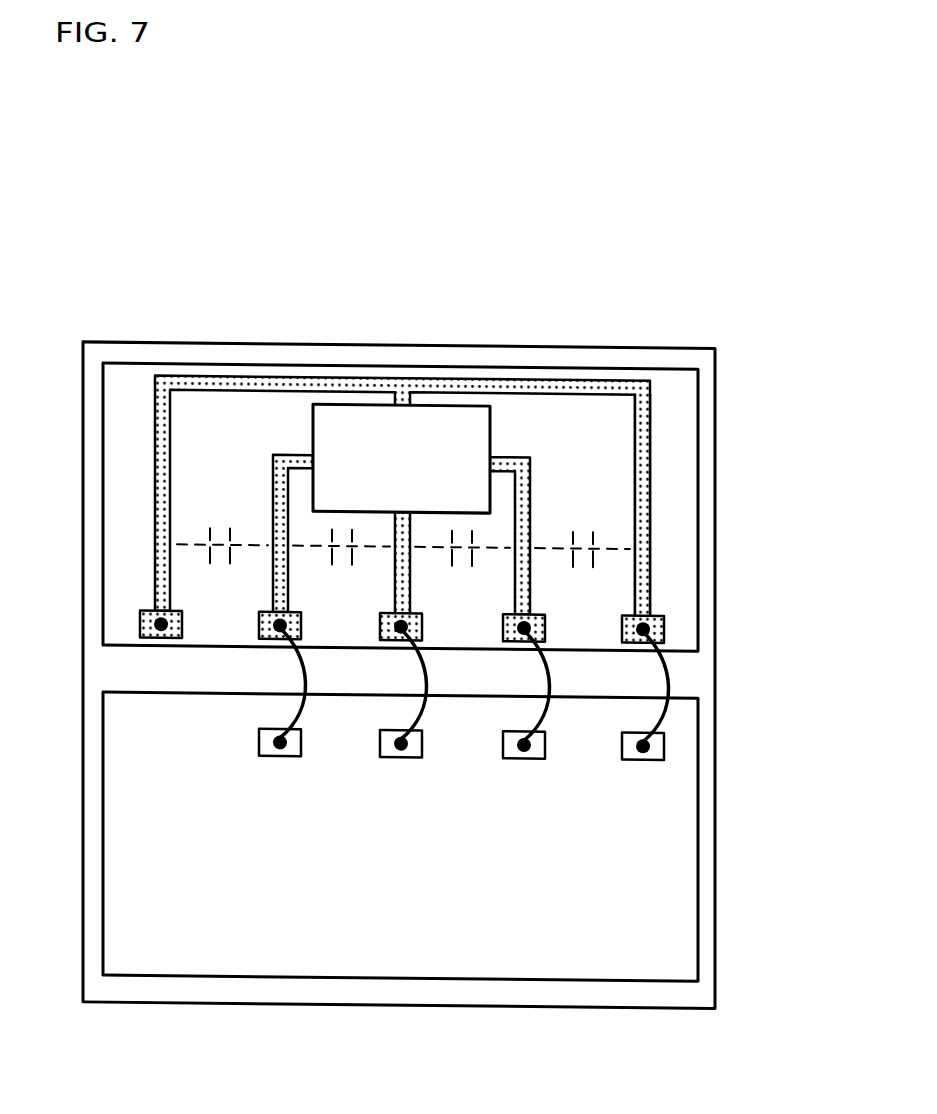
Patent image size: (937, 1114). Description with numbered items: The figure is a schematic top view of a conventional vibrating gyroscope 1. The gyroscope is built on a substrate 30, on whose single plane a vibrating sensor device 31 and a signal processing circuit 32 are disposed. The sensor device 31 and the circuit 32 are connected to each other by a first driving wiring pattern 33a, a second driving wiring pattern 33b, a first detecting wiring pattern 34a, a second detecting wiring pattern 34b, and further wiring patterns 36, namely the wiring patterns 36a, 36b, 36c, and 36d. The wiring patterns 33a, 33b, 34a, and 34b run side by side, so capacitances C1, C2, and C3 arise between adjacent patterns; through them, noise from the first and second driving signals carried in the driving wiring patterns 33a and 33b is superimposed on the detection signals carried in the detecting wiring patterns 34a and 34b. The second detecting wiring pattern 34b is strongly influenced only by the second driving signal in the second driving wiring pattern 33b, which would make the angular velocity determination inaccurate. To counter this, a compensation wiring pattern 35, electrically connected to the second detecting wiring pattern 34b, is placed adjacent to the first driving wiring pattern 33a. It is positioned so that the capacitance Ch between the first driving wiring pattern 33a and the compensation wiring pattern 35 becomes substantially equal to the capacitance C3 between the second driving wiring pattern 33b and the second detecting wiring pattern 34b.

The vibrating gyroscope 1 is at (574, 190).
The substrate 30 is at (692, 677).
The vibrating sensor device 31 is at (437, 421).
The signal processing circuit 32 is at (670, 866).
The first driving wiring pattern 33a is at (272, 493).
The second driving wiring pattern 33b is at (532, 493).
The first detecting wiring pattern 34a is at (394, 573).
The second detecting wiring pattern 34b is at (650, 470).
The compensation wiring pattern 35 is at (155, 446).
The wiring patterns 36 is at (299, 667).
The wiring pattern 36a is at (222, 710).
The wiring pattern 36b is at (430, 677).
The wiring pattern 36c is at (550, 680).
The wiring pattern 36d is at (670, 708).
The capacitance Ch is at (232, 562).
The capacitance C1 is at (330, 558).
The capacitance C2 is at (452, 558).
The capacitance C3 is at (572, 558).